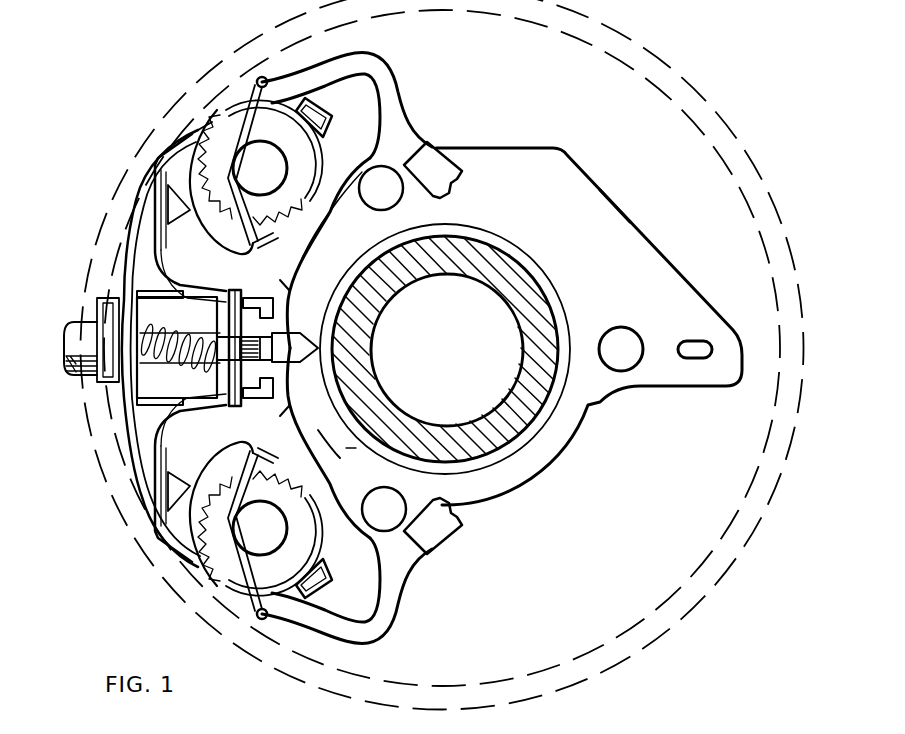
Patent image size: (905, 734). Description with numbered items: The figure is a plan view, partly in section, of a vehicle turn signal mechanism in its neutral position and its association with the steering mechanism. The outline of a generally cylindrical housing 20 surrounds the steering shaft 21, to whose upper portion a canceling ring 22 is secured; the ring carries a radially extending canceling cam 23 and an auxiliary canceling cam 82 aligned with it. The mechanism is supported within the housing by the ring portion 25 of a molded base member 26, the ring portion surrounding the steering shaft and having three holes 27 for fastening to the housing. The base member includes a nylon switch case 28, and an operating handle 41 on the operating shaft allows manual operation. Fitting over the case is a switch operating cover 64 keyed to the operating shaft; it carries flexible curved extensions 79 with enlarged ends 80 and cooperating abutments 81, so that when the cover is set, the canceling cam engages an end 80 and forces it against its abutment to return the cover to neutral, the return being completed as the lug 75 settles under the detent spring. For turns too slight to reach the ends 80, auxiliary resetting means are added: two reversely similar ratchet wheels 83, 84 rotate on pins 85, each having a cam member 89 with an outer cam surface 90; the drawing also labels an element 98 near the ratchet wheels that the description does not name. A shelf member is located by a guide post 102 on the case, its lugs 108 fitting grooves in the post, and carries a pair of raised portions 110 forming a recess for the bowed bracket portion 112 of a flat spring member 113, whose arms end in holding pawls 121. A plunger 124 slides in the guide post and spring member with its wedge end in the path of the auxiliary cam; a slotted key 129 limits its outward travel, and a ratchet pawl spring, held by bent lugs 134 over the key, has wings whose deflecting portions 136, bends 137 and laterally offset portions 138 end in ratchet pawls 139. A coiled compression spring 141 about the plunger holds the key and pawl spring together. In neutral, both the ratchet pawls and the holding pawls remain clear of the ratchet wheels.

The housing 20 is at (710, 104).
The steering shaft 21 is at (548, 311).
The canceling ring 22 is at (567, 332).
The canceling cam 23 is at (351, 452).
The ring portion 25 is at (630, 242).
The base member 26 is at (620, 210).
The holes 27 is at (622, 340).
The switch case 28 is at (193, 128).
The operating handle 41 is at (70, 328).
The cover 64 is at (336, 190).
The lug 75 is at (326, 112).
The flexible curved extensions 79 is at (394, 64).
The enlarged ends 80 is at (462, 172).
The abutment 81 is at (344, 166).
The auxiliary canceling cam 82 is at (332, 440).
The ratchet wheel 83 is at (289, 533).
The ratchet wheel 84 is at (289, 170).
The pins 85 is at (252, 179).
The cam member 89 is at (220, 248).
The outer cam surface 90 is at (256, 84).
The spring 98 is at (244, 130).
The guide post 102 is at (287, 312).
The lugs 108 is at (293, 296).
The raised portions 110 is at (160, 288).
The bracket portion 112 is at (186, 383).
The spring member 113 is at (140, 474).
The holding pawl 121 is at (146, 158).
The plunger 124 is at (288, 337).
The slotted key 129 is at (246, 378).
The bent lugs 134 is at (232, 285).
The deflecting portion 136 is at (180, 278).
The bend 137 is at (167, 252).
The laterally offset portion 138 is at (171, 465).
The ratchet pawl 139 is at (150, 159).
The coiled compression spring 141 is at (176, 336).